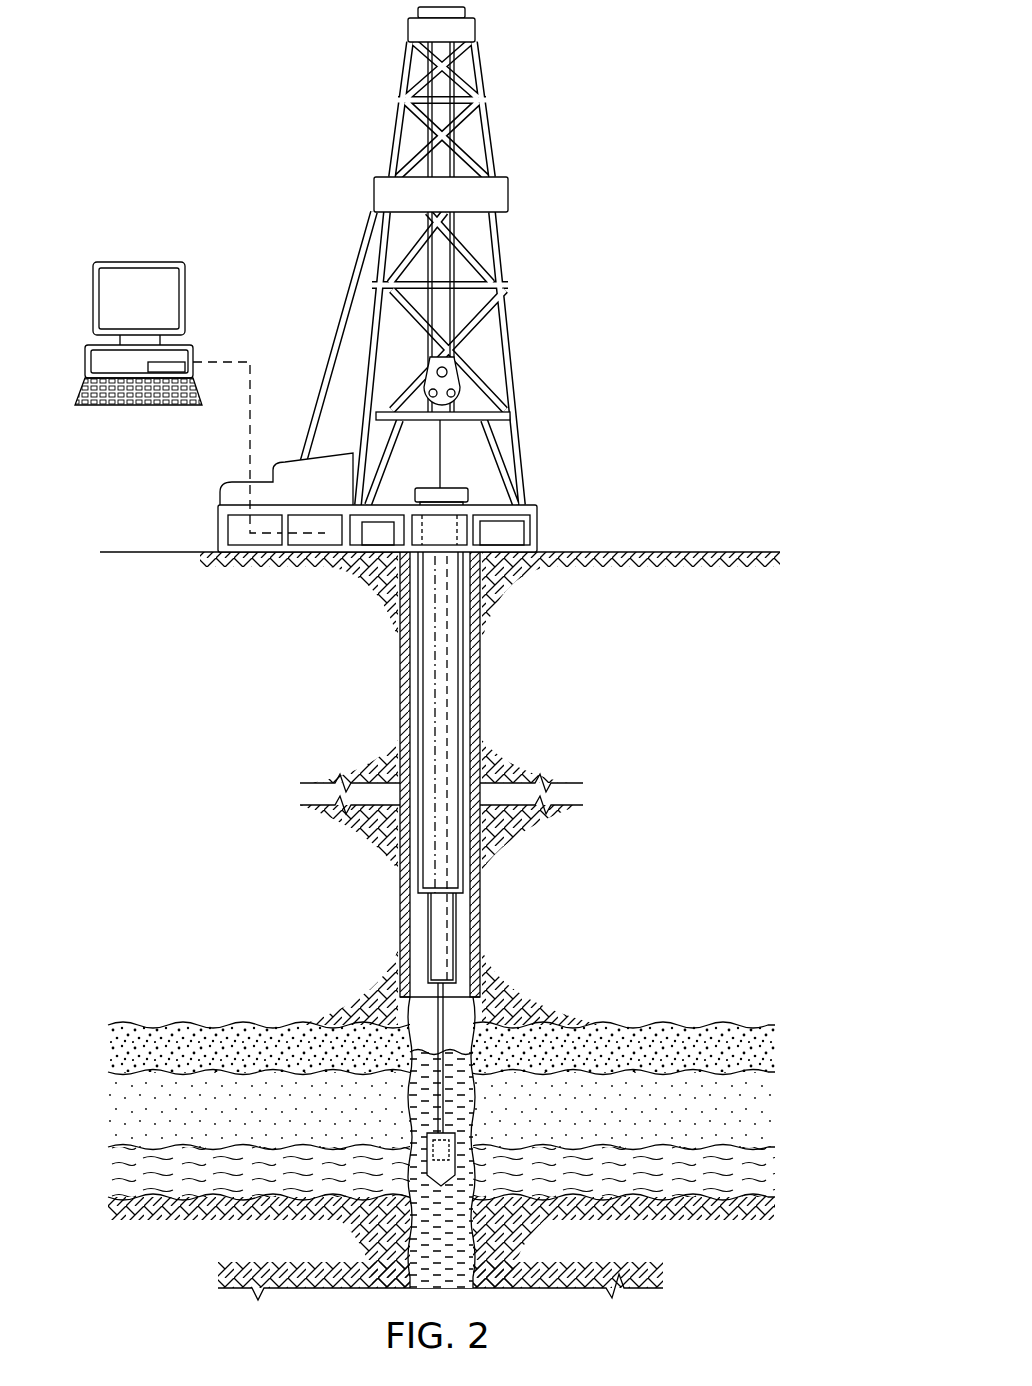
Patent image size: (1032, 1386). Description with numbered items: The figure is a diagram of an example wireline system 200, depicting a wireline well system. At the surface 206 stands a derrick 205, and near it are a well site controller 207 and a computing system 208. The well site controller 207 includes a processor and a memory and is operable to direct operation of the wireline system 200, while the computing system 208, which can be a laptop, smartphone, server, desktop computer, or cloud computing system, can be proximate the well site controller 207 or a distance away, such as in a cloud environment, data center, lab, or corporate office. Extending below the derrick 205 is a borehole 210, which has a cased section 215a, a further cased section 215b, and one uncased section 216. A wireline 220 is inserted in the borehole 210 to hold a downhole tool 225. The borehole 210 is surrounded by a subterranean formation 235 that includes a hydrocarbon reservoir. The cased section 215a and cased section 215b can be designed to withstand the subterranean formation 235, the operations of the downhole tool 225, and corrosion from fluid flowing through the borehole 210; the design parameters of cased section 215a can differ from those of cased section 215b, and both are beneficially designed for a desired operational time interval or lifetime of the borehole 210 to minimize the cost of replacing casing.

The wireline system 200 is at (283, 129).
The derrick 205 is at (518, 362).
The surface 206 is at (575, 552).
The well site controller 207 is at (377, 535).
The computing system 208 is at (138, 262).
The borehole 210 is at (474, 674).
The cased section 215a is at (456, 850).
The cased section 215b is at (428, 915).
The uncased section 216 is at (468, 1105).
The wireline 220 is at (450, 1016).
The downhole tool 225 is at (424, 1156).
The subterranean formation 235 is at (786, 1122).